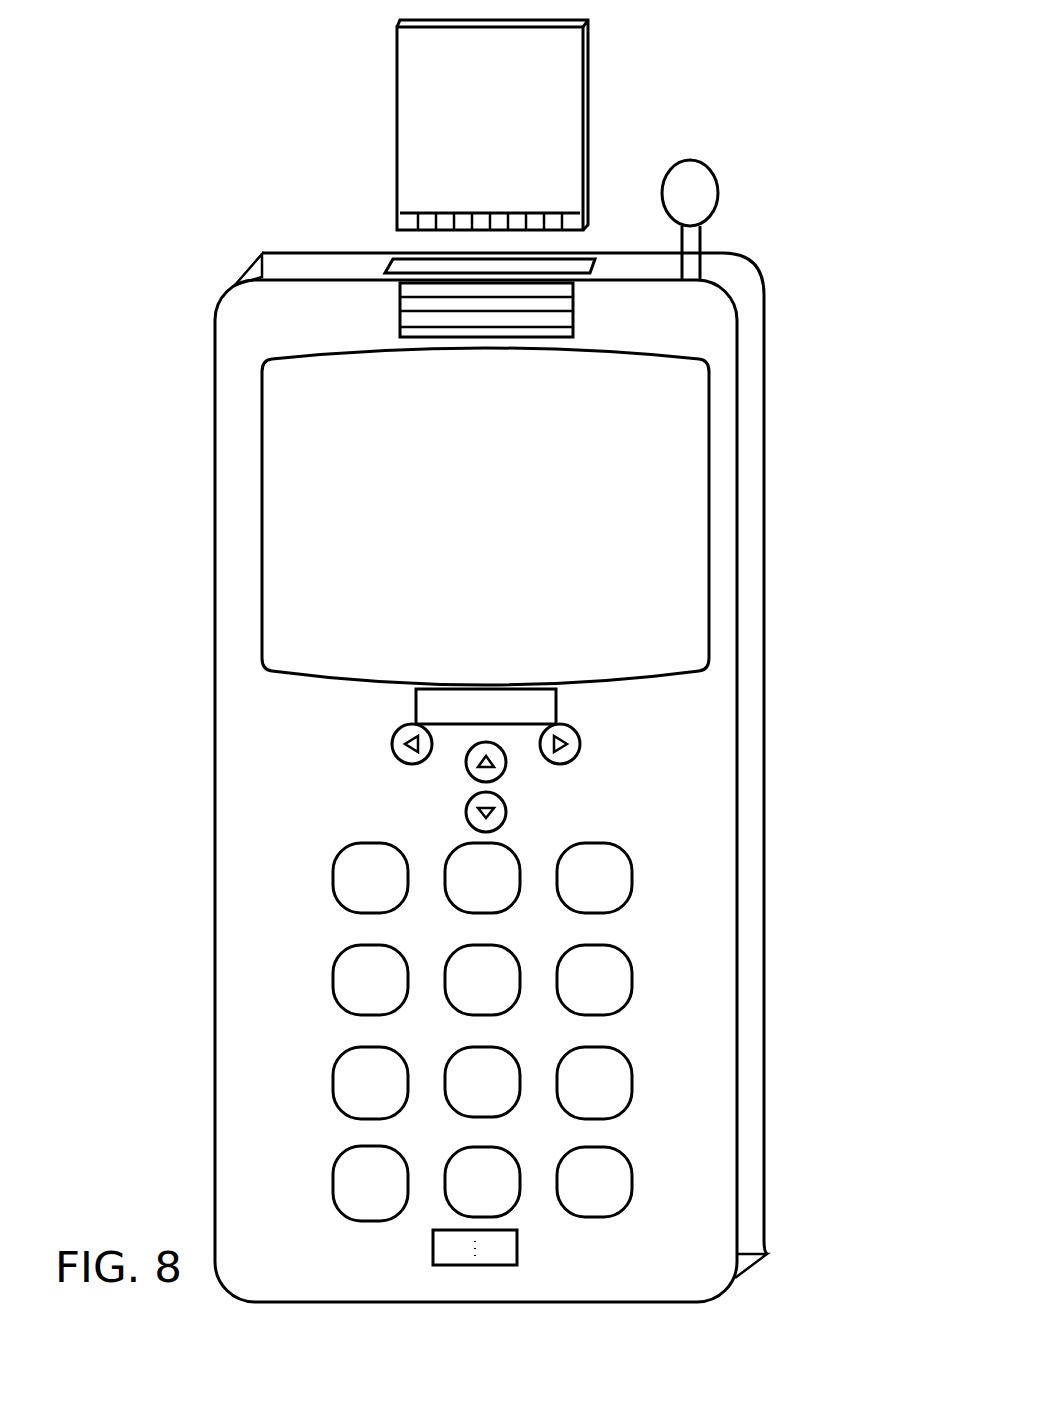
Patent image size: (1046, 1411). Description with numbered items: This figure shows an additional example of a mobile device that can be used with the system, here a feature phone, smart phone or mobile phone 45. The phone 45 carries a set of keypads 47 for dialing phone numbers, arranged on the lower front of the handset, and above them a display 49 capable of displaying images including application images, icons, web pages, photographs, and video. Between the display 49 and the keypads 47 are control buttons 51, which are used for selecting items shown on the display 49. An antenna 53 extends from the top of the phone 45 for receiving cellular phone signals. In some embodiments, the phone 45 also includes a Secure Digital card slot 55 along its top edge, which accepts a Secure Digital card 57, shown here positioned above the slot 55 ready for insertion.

The phone 45 is at (210, 316).
The keypads 47 is at (660, 873).
The display 49 is at (709, 515).
The control buttons 51 is at (432, 770).
The antenna 53 is at (722, 194).
The Secure Digital (SD) card slot 55 is at (428, 268).
The SD card 57 is at (593, 87).